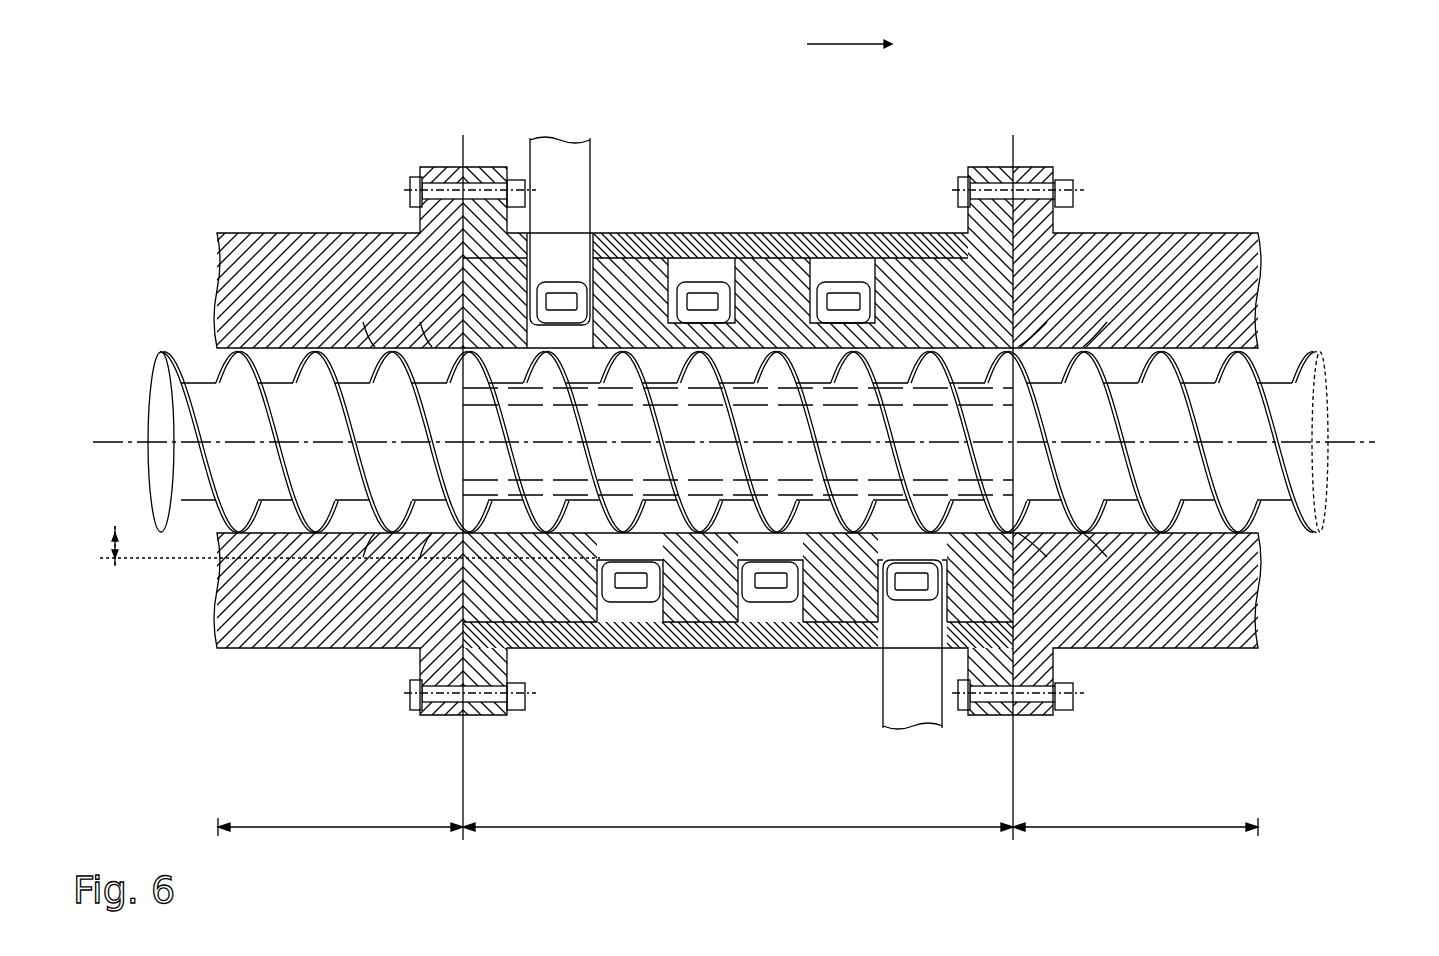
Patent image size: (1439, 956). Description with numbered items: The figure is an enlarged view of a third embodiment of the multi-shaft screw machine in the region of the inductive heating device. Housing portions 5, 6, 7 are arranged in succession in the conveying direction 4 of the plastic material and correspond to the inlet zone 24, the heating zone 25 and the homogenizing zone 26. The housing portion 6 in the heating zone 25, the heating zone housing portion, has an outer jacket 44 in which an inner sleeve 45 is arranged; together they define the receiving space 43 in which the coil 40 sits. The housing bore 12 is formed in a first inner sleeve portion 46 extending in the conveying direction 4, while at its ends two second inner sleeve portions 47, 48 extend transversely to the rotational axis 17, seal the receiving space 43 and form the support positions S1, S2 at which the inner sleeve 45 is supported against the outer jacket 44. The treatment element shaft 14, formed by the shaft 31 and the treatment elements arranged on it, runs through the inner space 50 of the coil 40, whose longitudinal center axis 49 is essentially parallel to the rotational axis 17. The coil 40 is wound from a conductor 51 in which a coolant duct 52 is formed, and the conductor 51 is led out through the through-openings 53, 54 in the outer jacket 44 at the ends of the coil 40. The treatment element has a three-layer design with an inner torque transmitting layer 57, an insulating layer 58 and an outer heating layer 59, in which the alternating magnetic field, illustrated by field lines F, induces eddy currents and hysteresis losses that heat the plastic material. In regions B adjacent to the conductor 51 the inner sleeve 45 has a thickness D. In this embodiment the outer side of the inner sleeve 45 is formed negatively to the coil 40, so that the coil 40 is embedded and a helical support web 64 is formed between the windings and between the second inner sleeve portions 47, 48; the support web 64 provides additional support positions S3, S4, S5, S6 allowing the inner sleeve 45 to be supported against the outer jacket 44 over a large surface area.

The conveying direction 4 is at (847, 44).
The housing portion 5 is at (292, 248).
The heating zone housing portion 6 is at (712, 225).
The housing portion 7 is at (1143, 262).
The housing bore 12 is at (265, 522).
The treatment element shaft 14 is at (752, 441).
The rotational axis 17 is at (1315, 440).
The inlet zone 24 is at (340, 815).
The heating zone 25 is at (738, 812).
The homogenizing zone 26 is at (1135, 815).
The shaft 31 is at (1307, 452).
The coil 40 is at (777, 632).
The receiving space 43 is at (848, 262).
The outer jacket 44 is at (818, 258).
The inner sleeve 45 is at (947, 228).
The first inner sleeve portion 46 is at (900, 340).
The second inner sleeve portion 47 is at (466, 270).
The second inner sleeve portion 48 is at (1083, 215).
The longitudinal center axis 49 is at (232, 443).
The inner space 50 is at (750, 437).
The conductor 51 is at (565, 150).
The coolant duct 52 is at (630, 590).
The through-opening 53 is at (485, 252).
The through-opening 54 is at (880, 562).
The torque transmitting layer 57 is at (640, 345).
The insulating layer 58 is at (735, 492).
The heating layer 59 is at (540, 512).
The support web 64 is at (745, 345).
The region B is at (613, 262).
The thickness D is at (341, 546).
The field lines F is at (412, 345).
The support position S1 is at (462, 240).
The support position S2 is at (1013, 165).
The support position S3 is at (620, 478).
The support position S4 is at (793, 345).
The support position S5 is at (706, 620).
The support position S6 is at (838, 650).